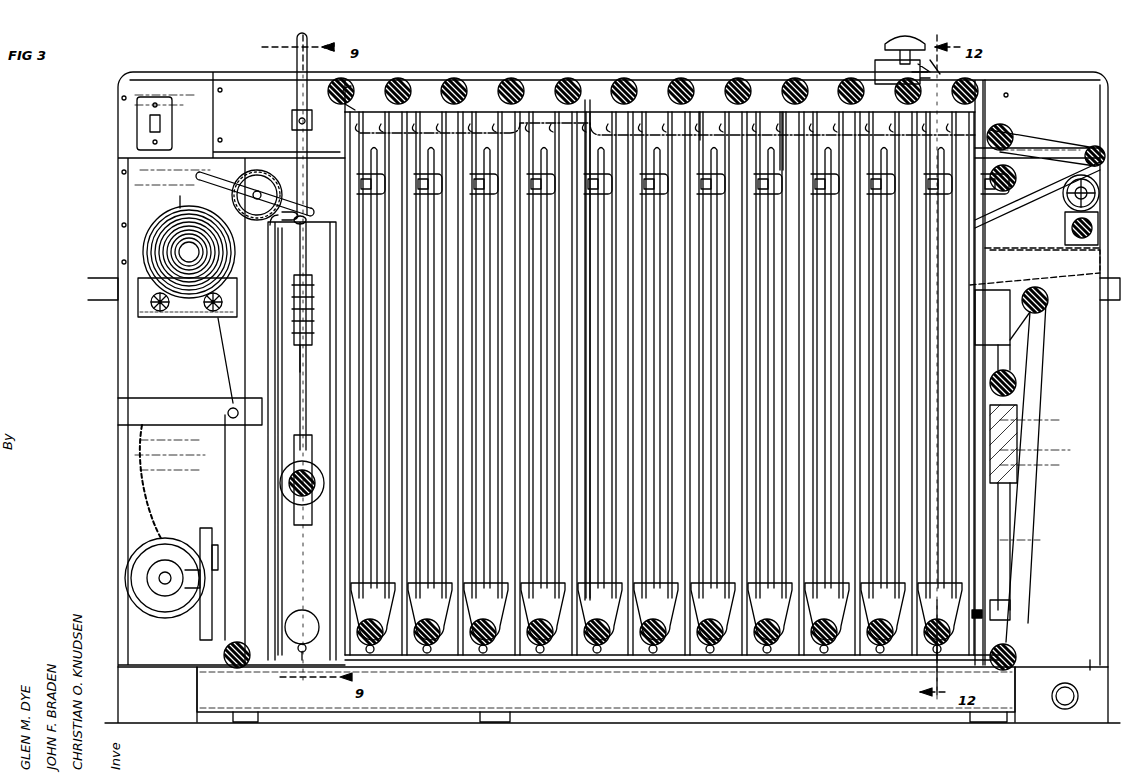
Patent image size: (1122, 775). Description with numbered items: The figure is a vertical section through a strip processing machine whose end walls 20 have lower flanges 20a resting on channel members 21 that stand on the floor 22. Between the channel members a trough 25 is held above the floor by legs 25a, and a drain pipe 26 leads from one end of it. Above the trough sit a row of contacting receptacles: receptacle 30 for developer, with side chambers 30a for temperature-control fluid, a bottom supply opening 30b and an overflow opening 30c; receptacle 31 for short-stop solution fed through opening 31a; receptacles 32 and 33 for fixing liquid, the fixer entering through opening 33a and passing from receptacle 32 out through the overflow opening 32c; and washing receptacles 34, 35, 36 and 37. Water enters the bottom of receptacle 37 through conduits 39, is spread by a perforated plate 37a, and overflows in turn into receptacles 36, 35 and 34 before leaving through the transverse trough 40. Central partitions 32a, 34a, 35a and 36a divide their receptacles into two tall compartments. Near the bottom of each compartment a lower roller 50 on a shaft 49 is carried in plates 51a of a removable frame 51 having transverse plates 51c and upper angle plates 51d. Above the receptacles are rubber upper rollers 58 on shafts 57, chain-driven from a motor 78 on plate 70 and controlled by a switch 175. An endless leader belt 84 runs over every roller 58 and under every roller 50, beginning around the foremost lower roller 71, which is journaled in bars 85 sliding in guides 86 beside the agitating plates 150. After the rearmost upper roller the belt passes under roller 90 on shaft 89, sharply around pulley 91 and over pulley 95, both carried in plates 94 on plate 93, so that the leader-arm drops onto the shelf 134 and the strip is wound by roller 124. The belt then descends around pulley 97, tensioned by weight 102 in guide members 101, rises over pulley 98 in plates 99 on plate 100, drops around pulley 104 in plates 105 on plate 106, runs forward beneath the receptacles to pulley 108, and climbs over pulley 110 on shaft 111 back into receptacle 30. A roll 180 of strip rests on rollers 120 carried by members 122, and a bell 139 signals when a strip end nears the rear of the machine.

The end wall 20 is at (122, 500).
The lower flange 20a is at (1104, 662).
The channel member 21 is at (128, 692).
The floor 22 is at (636, 722).
The trough 25 is at (223, 712).
The supporting strip 25a is at (506, 722).
The drain pipe 26 is at (1055, 710).
The receptacle 30 is at (274, 182).
The chamber 30a is at (282, 218).
The opening 30b is at (302, 660).
The column upper hook 30c is at (392, 82).
The receptacle 31 is at (376, 380).
The opening 31a is at (374, 658).
The receptacle 32 is at (508, 662).
The central partition 32a is at (454, 632).
The overflow opening 32c is at (460, 82).
The receptacle 33 is at (560, 662).
The opening 33a is at (543, 656).
The receptacle 34 is at (678, 662).
The central partition 34a is at (626, 652).
The receptacle 35 is at (778, 660).
The central partition 35a is at (734, 652).
The receptacle 36 is at (838, 662).
The central partition 36a is at (852, 652).
The receptacle 37 is at (988, 106).
The perforated plate 37a is at (1016, 650).
The conduit 39 is at (940, 698).
The trough 40 is at (610, 104).
The shaft 49 is at (465, 644).
The lower roller 50 is at (720, 664).
The frame 51 is at (784, 106).
The plate 51a is at (422, 636).
The transverse plate 51c is at (930, 662).
The angle plate 51d is at (694, 106).
The shaft 57 is at (576, 84).
The upper roller 58 is at (520, 82).
The plate 70 is at (203, 528).
The central crowned roller 71 is at (307, 505).
The electric motor 78 is at (174, 518).
The leader belt 84 is at (225, 545).
The bar 85 is at (294, 88).
The guide 86 is at (296, 110).
The shaft 89 is at (1000, 128).
The roller 90 is at (1010, 138).
The pulley 91 is at (1096, 148).
The plate 93 is at (1004, 190).
The plate 94 is at (1038, 178).
The pulley 95 is at (1050, 196).
The pulley 97 is at (1016, 381).
The pulley 98 is at (1048, 300).
The plate 99 is at (1034, 306).
The plate 100 is at (1016, 324).
The guide member 101 is at (1006, 499).
The weight 102 is at (1020, 412).
The pulley 104 is at (1012, 650).
The plate 105 is at (1000, 622).
The plate 106 is at (980, 610).
The pulley 108 is at (244, 638).
The pulley 110 is at (260, 168).
The shaft 111 is at (244, 172).
The roller 120 is at (200, 317).
The member 122 is at (160, 218).
The roller 124 is at (1068, 232).
The shelf 134 is at (1030, 274).
The bell 139 is at (884, 44).
The plate 150 is at (294, 300).
The switch 175 is at (137, 114).
The roll 180 is at (182, 206).